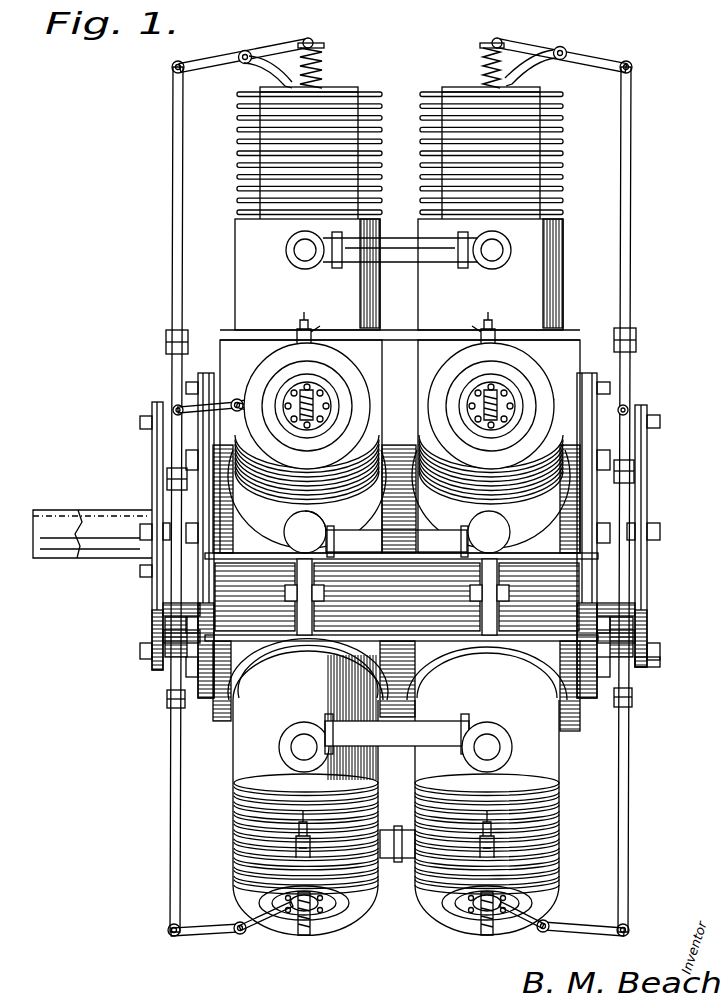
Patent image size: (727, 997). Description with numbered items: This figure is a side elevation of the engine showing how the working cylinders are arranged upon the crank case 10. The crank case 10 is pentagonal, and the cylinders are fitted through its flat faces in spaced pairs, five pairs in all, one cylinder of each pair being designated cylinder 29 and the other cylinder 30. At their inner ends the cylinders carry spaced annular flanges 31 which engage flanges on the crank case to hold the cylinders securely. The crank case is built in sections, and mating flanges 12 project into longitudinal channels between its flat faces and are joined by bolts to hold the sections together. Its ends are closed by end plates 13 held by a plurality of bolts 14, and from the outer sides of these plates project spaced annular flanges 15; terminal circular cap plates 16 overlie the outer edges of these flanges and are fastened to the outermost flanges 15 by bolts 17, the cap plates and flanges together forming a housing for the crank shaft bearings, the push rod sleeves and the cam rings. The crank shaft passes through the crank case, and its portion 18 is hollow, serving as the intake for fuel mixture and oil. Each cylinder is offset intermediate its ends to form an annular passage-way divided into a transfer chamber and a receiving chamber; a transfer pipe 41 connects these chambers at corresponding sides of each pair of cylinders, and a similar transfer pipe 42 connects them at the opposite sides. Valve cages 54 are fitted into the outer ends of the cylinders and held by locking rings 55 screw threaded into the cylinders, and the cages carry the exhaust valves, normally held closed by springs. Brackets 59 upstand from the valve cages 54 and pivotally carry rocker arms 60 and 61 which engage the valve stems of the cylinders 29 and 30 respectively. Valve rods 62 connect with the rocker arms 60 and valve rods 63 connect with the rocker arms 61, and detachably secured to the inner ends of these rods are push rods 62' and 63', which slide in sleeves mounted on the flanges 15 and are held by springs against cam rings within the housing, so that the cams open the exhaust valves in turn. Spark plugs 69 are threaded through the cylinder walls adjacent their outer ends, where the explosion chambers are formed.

The crank case 10 is at (652, 668).
The mating flanges 12 is at (507, 617).
The end plates 13 is at (204, 620).
The bolts 14 is at (660, 545).
The annular flanges 15 is at (198, 586).
The cap plates 16 is at (647, 408).
The bolts 17 is at (661, 421).
The crank shaft portion 18 is at (103, 512).
The working cylinder 29 is at (563, 180).
The working cylinder 30 is at (383, 99).
The annular flanges 31 is at (354, 656).
The transfer pipe 41 is at (388, 338).
The transfer pipe 42 is at (393, 237).
The valve cages 54 is at (318, 930).
The locking rings 55 is at (342, 918).
The brackets 59 is at (260, 72).
The rocker arm 60 is at (605, 52).
The rocker arm 61 is at (218, 50).
The valve rods 62 is at (653, 498).
The push rods 62' is at (661, 342).
The valve rods 63 is at (159, 498).
The push rods 63' is at (136, 515).
The spark plugs 69 is at (297, 332).